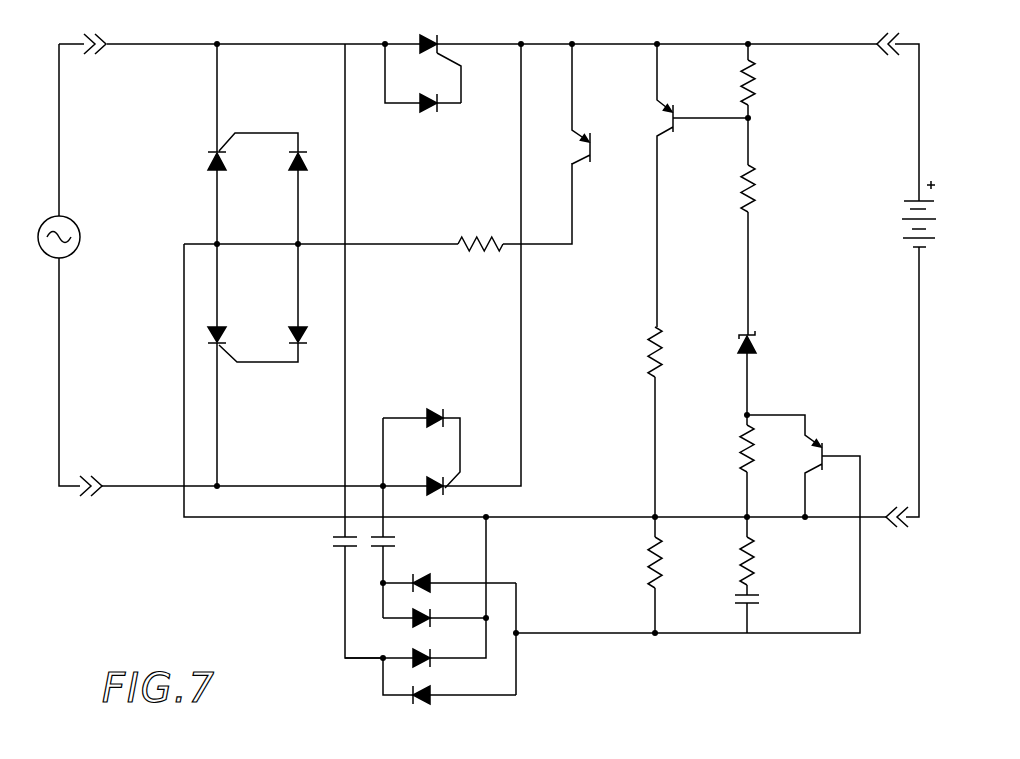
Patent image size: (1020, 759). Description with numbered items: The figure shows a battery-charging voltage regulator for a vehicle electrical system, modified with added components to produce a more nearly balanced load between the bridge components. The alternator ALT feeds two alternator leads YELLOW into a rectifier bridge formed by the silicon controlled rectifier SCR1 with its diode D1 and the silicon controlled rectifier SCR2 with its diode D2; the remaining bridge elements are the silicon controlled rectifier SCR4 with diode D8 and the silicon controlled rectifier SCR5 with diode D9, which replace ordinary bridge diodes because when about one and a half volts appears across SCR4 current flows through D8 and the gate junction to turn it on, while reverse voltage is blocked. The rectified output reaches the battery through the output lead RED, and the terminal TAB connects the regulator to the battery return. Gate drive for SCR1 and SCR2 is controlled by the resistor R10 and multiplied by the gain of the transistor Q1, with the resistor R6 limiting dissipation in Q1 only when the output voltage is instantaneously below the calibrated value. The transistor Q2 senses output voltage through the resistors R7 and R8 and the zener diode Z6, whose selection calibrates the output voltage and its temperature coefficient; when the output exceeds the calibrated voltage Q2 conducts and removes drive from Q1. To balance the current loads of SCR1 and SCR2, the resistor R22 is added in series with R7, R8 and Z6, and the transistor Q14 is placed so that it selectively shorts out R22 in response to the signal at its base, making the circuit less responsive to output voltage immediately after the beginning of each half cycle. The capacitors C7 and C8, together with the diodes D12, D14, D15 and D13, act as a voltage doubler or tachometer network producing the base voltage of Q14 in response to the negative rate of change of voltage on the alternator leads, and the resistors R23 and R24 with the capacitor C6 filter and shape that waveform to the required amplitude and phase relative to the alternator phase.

The alternator ALT is at (68, 249).
The alternator lead YELLOW is at (128, 267).
The output lead RED is at (868, 39).
The terminal TAB is at (856, 527).
The silicon controlled rectifier SCR1 is at (227, 144).
The diode D1 is at (315, 195).
The silicon controlled rectifier SCR2 is at (253, 365).
The diode D2 is at (314, 295).
The silicon controlled rectifier SCR4 is at (454, 65).
The diode D8 is at (428, 87).
The transistor Q1 is at (592, 104).
The resistor R6 is at (480, 254).
The transistor Q2 is at (702, 185).
The resistor R7 is at (762, 81).
The resistor R8 is at (762, 226).
The resistor R10 is at (675, 422).
The zener diode Z6 is at (760, 373).
The resistor R22 is at (725, 466).
The transistor Q14 is at (797, 466).
The resistor R24 is at (632, 575).
The resistor R23 is at (726, 556).
The capacitor C6 is at (759, 612).
The diode D9 is at (426, 435).
The silicon controlled rectifier SCR5 is at (458, 493).
The capacitor C8 is at (343, 351).
The capacitor C7 is at (397, 552).
The diode D12 is at (449, 577).
The diode D14 is at (434, 612).
The diode D15 is at (415, 592).
The diode D13 is at (449, 681).